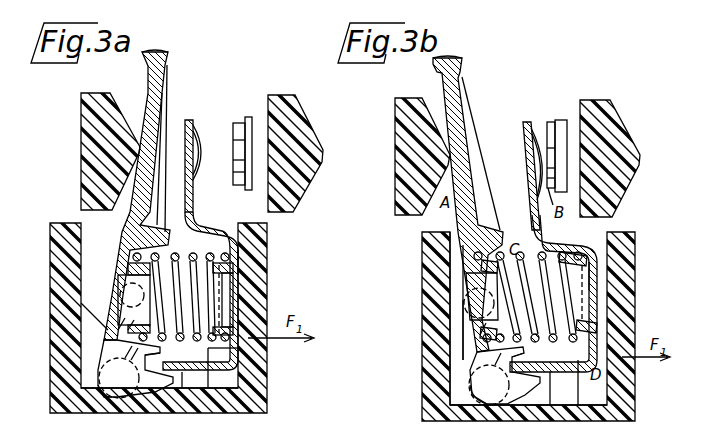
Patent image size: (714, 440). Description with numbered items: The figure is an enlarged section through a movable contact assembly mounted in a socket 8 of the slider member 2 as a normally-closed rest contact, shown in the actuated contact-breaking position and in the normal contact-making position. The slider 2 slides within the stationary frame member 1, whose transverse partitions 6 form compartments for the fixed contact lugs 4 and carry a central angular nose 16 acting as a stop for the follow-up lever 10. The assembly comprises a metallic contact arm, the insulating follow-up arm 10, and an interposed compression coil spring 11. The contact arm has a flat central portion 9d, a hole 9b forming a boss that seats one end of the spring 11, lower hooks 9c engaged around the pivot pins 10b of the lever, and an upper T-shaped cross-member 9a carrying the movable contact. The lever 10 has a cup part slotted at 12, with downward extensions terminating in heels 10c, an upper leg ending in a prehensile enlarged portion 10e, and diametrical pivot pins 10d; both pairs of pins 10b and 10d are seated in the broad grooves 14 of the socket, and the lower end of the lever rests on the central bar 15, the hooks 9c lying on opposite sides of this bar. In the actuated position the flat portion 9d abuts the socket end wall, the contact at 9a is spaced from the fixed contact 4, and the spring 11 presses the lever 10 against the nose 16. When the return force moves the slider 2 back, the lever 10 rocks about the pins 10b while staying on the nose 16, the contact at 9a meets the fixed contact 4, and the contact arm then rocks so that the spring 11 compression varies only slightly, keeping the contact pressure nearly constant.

In FIG. 3A, the frame member 1 is at (63, 342).
In FIG. 3B, the slider member 2 is at (625, 355).
In FIG. 3A, the contact lug 4 is at (239, 124).
In FIG. 3B, the contact lug 4 is at (551, 122).
In FIG. 3A, the partition 6 is at (93, 147).
In FIG. 3B, the partition 6 is at (403, 143).
In FIG. 3A, the socket 8 is at (210, 225).
In FIG. 3B, the socket 8 is at (537, 285).
In FIG. 3A, the cross-member 9a is at (194, 198).
In FIG. 3B, the cross-member 9a is at (528, 155).
In FIG. 3B, the hole 9b is at (583, 277).
In FIG. 3A, the hooks 9c is at (107, 388).
In FIG. 3B, the hooks 9c is at (468, 388).
In FIG. 3A, the flat central portion 9d is at (239, 262).
In FIG. 3A, the follow-up arm 10 is at (148, 240).
In FIG. 3B, the follow-up arm 10 is at (474, 245).
In FIG. 3A, the pivot pins 10b is at (110, 378).
In FIG. 3B, the pivot pins 10b is at (475, 377).
In FIG. 3A, the heel 10c is at (155, 396).
In FIG. 3B, the heel 10c is at (535, 385).
In FIG. 3A, the pivot pins 10d is at (121, 292).
In FIG. 3B, the pivot pins 10d is at (468, 305).
In FIG. 3A, the prehensile enlarged portion 10e is at (168, 60).
In FIG. 3B, the prehensile enlarged portion 10e is at (462, 62).
In FIG. 3A, the compression coil spring 11 is at (199, 340).
In FIG. 3B, the compression coil spring 11 is at (548, 343).
In FIG. 3B, the slot 12 is at (470, 358).
In FIG. 3B, the groove 14 is at (455, 252).
In FIG. 3A, the bar 15 is at (205, 403).
In FIG. 3B, the bar 15 is at (588, 413).
In FIG. 3A, the nose 16 is at (118, 128).
In FIG. 3B, the nose 16 is at (436, 122).